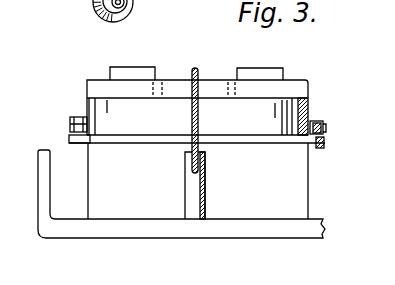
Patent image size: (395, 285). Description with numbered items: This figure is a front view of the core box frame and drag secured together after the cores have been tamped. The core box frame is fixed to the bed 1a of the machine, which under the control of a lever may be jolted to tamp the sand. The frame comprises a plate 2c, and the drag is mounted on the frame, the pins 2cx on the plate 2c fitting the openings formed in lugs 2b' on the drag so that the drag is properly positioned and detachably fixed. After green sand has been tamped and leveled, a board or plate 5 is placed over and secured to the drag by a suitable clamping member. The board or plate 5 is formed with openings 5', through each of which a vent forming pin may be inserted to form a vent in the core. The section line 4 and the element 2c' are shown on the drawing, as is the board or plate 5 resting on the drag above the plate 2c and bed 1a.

The board or plate 5 is at (218, 152).
The section line 4- 4 is at (230, 51).
The openings 5' is at (196, 85).
The partition rod 2c' is at (215, 120).
The pins 2cx is at (317, 121).
The lugs 2b' is at (342, 124).
The plate 2c is at (197, 149).
The bed 1a is at (280, 233).